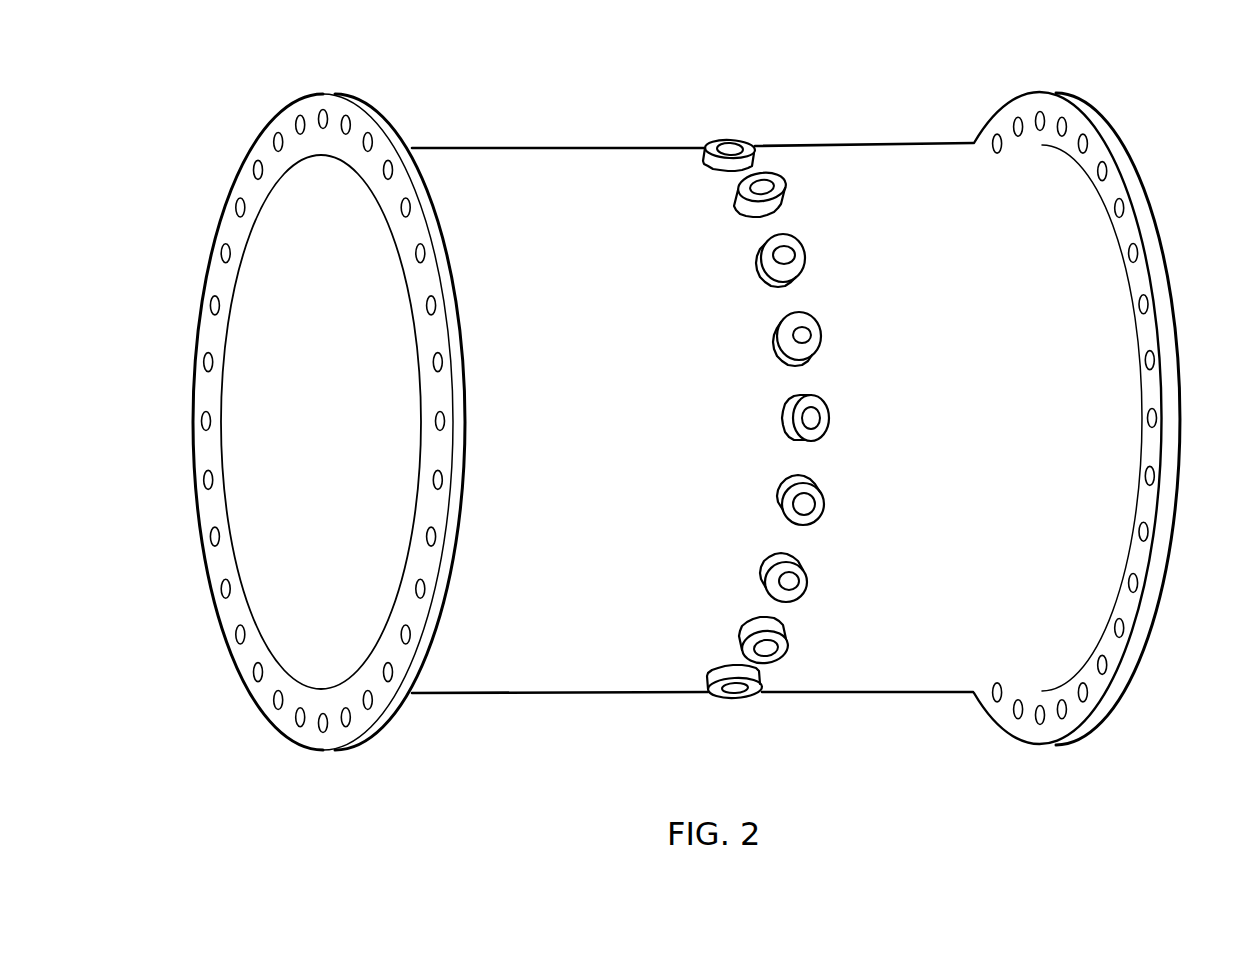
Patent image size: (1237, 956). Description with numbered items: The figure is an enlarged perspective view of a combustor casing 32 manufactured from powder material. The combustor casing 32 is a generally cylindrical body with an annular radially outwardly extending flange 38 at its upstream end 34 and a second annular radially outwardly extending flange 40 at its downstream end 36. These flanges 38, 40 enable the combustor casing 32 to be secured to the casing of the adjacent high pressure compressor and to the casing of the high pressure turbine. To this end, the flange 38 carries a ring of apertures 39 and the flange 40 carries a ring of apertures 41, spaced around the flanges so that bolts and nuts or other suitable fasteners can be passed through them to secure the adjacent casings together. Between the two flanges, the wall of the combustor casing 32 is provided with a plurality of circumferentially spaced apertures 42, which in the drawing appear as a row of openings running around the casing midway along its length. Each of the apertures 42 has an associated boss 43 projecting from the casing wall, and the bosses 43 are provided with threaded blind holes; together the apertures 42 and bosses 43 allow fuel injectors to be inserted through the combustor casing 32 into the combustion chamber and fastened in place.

The combustor casing 32 is at (752, 144).
The upstream end 34 is at (408, 120).
The downstream end 36 is at (966, 120).
The flange 38 is at (308, 113).
The apertures 39 is at (369, 704).
The flange 40 is at (1015, 96).
The apertures 41 is at (1104, 167).
The apertures 42 is at (784, 259).
The bosses 43 is at (792, 257).